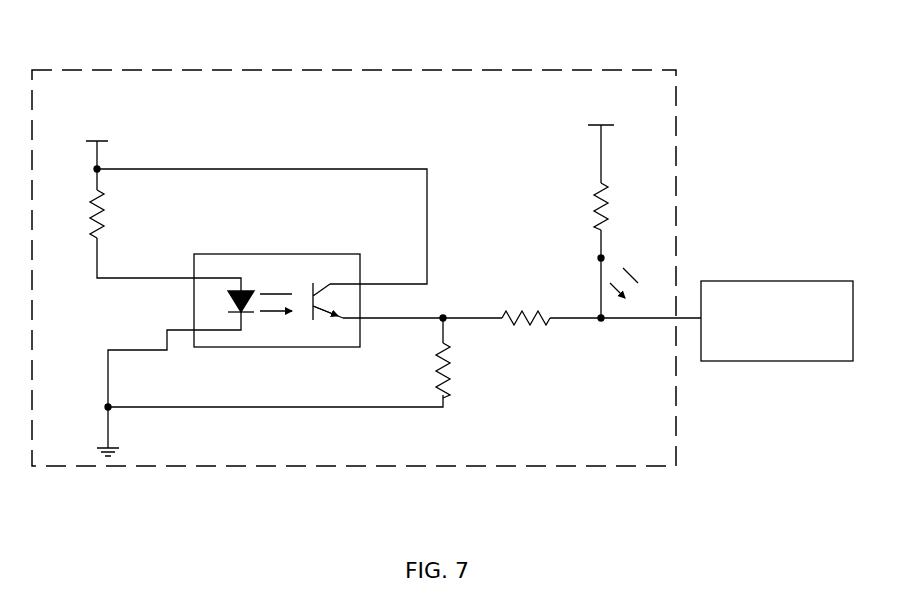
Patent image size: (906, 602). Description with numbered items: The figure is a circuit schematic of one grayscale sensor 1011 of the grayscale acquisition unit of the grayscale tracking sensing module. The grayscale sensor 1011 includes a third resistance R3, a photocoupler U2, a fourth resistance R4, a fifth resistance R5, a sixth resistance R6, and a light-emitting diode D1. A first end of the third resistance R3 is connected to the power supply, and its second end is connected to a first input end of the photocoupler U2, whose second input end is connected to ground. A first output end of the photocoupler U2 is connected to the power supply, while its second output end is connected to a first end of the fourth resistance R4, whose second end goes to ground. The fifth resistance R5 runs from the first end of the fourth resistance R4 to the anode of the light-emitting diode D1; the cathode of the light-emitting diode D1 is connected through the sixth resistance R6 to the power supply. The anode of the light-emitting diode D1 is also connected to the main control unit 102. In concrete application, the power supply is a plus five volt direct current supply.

The grayscale sensor 1011 is at (378, 70).
The main control unit 102 is at (760, 281).
The third resistance R3 is at (83, 214).
The fourth resistance R4 is at (455, 370).
The fifth resistance R5 is at (526, 306).
The sixth resistance R6 is at (614, 206).
The photocoupler U2 is at (277, 292).
The light-emitting diode D1 is at (634, 273).